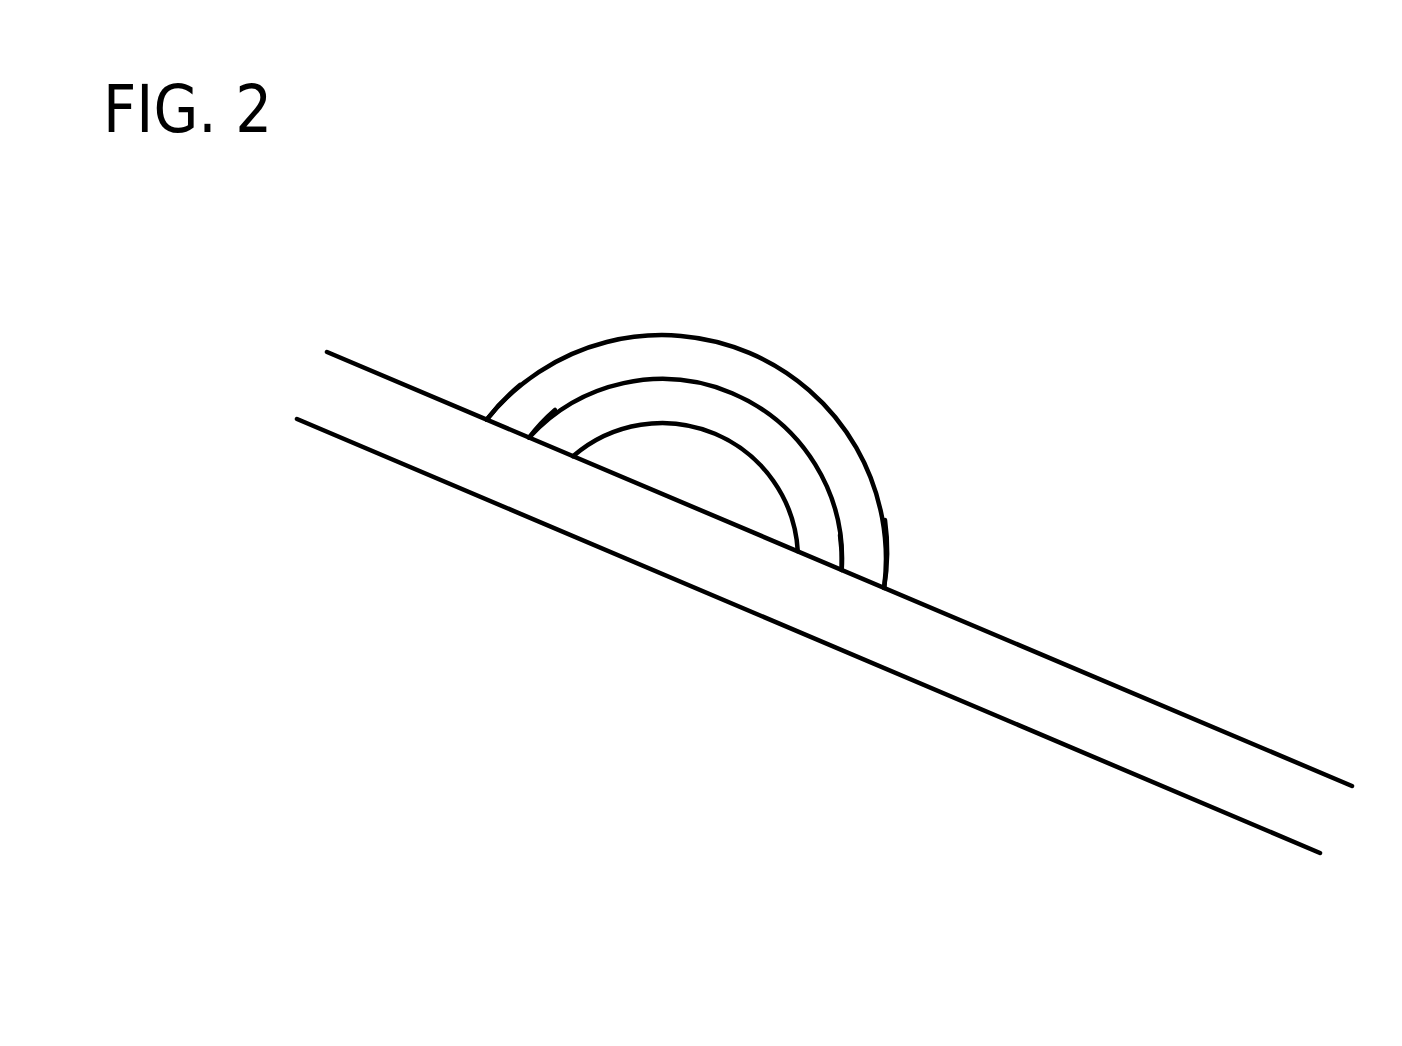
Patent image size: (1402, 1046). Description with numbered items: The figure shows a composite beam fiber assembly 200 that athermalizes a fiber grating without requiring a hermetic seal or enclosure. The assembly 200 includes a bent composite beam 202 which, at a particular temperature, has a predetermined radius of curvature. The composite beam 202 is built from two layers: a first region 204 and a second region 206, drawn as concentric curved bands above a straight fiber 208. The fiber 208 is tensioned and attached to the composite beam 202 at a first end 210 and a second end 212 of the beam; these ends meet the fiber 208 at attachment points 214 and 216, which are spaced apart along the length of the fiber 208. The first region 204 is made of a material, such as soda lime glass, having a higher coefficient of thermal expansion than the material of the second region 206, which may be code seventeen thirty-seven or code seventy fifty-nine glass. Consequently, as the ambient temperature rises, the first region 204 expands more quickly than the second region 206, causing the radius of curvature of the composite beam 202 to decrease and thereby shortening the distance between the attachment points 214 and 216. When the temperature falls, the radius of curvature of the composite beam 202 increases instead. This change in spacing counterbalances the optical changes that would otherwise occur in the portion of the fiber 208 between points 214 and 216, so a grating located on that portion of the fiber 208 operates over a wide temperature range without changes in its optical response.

The composite beam fiber assembly 200 is at (1086, 430).
The composite beam 202 is at (787, 372).
The first region 204 is at (823, 433).
The second region 206 is at (643, 402).
The fiber 208 is at (657, 575).
The first end 210 is at (887, 554).
The second end 212 is at (492, 413).
The attachment point 214 is at (841, 571).
The attachment point 216 is at (528, 436).